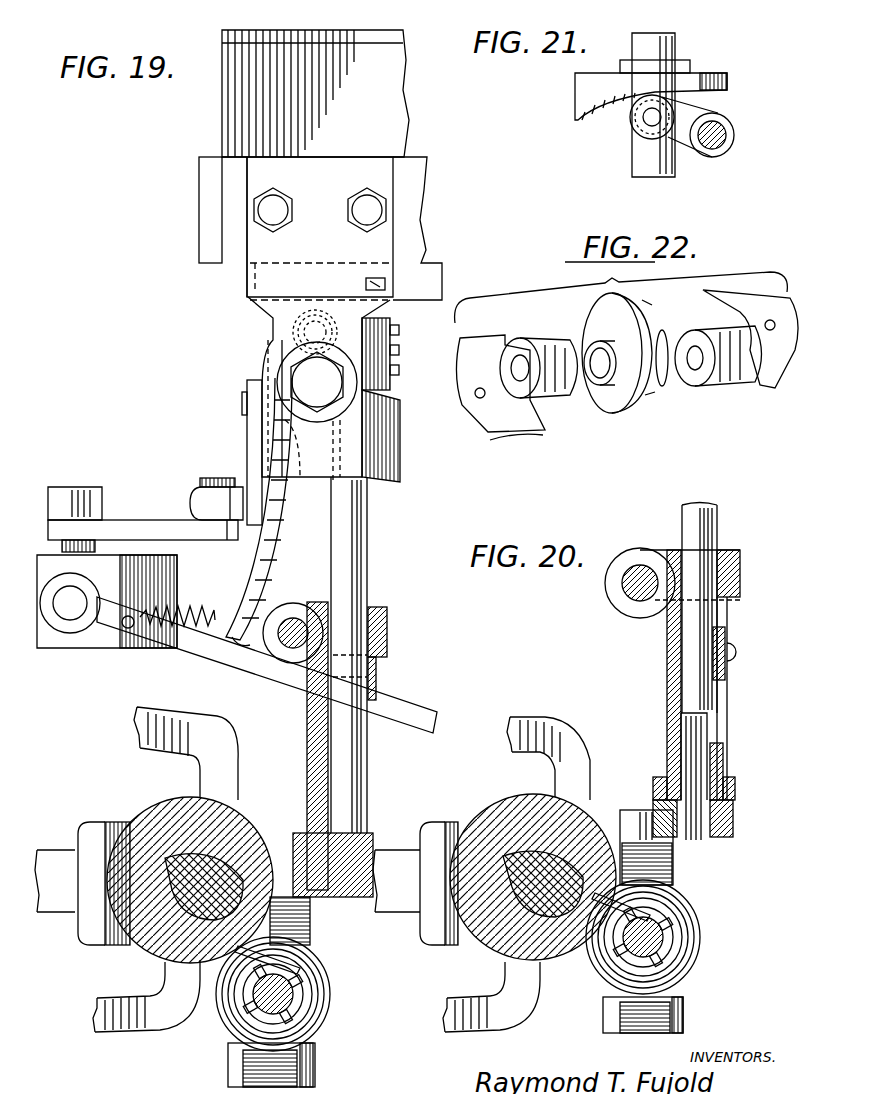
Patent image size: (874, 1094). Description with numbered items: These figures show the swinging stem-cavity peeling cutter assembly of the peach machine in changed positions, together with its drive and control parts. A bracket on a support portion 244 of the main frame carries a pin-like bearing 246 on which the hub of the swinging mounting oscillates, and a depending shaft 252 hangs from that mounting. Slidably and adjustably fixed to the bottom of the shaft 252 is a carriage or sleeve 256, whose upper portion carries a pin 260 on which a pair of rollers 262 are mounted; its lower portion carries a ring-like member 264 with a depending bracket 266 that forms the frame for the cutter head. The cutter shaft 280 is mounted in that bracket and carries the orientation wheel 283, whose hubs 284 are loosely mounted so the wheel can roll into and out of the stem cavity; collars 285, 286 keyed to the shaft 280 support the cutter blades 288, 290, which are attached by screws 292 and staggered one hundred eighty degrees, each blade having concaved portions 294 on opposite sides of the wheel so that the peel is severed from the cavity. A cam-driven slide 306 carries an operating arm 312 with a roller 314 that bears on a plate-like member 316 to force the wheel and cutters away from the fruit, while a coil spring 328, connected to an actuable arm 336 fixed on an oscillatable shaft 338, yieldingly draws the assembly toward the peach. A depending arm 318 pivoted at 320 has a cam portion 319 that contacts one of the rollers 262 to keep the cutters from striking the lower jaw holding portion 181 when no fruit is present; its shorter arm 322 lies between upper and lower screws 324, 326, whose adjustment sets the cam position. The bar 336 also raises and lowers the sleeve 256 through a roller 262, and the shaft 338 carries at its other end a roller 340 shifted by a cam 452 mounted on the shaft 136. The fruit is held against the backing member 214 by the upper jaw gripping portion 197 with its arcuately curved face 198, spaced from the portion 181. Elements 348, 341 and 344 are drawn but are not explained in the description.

In FIG. 19, the support portion 244 is at (418, 200).
In FIG. 19, the upper screw 324 is at (367, 280).
In FIG. 19, the pivot 320 is at (292, 332).
In FIG. 19, the pin-like bearing 246 is at (300, 378).
In FIG. 19, the shorter arm 322 is at (386, 342).
In FIG. 19, the lower screw 326 is at (385, 397).
In FIG. 19, the slide 306 is at (62, 493).
In FIG. 19, the operating arm 312 is at (128, 526).
In FIG. 19, the roller 314 is at (193, 496).
In FIG. 19, the plate-like member 316 is at (262, 500).
In FIG. 19, the depending arm 318 is at (274, 582).
In FIG. 19, the coil spring 328 is at (212, 612).
In FIG. 19, the oscillatable shaft 338 is at (77, 612).
In FIG. 21, the oscillatable shaft 338 is at (735, 135).
In FIG. 19, the actuable arm 336 is at (215, 668).
In FIG. 19, the cam portion 319 is at (268, 680).
In FIG. 19, the rollers 262 is at (296, 660).
In FIG. 19, the pin 260 is at (338, 700).
In FIG. 20, the pin 260 is at (628, 582).
In FIG. 19, the gripping portion 197 is at (140, 725).
In FIG. 20, the gripping portion 197 is at (537, 740).
In FIG. 19, the arcuate curve 198 is at (228, 815).
In FIG. 20, the arcuate curve 198 is at (590, 800).
In FIG. 19, the backing member 214 is at (78, 832).
In FIG. 20, the backing member 214 is at (442, 822).
In FIG. 19, the ring-like member 264 is at (300, 923).
In FIG. 22, the ring-like member 264 is at (662, 382).
In FIG. 19, the depending bracket 266 is at (307, 937).
In FIG. 19, the collar 285 is at (300, 984).
In FIG. 22, the collar 285 is at (530, 345).
In FIG. 20, the collar 285 is at (670, 960).
In FIG. 19, the screws 292 is at (305, 1003).
In FIG. 19, the collar 286 is at (318, 1034).
In FIG. 22, the collar 286 is at (700, 340).
In FIG. 19, the shaft 280 is at (252, 1008).
In FIG. 20, the shaft 280 is at (660, 940).
In FIG. 19, the holding portion 181 is at (125, 1020).
In FIG. 20, the holding portion 181 is at (462, 1022).
In FIG. 21, the shaft 136 is at (680, 46).
In FIG. 21, the cam 452 is at (583, 100).
In FIG. 21, the pivot 348 is at (672, 114).
In FIG. 22, the concaved portions 294 is at (760, 283).
In FIG. 20, the concaved portions 294 is at (642, 875).
In FIG. 22, the orientation member 283 is at (640, 415).
In FIG. 22, the hubs 284 is at (605, 388).
In FIG. 22, the cutter blade 288 is at (505, 434).
In FIG. 20, the cutter blade 288 is at (672, 925).
In FIG. 22, the cutter blade 290 is at (750, 386).
In FIG. 20, the cutter blade 290 is at (610, 985).
In FIG. 20, the depending shaft 252 is at (720, 522).
In FIG. 20, the roller 340 is at (726, 635).
In FIG. 20, the pin 341 is at (738, 652).
In FIG. 20, the sleeve 344 is at (718, 728).
In FIG. 20, the carriage 256 is at (728, 760).